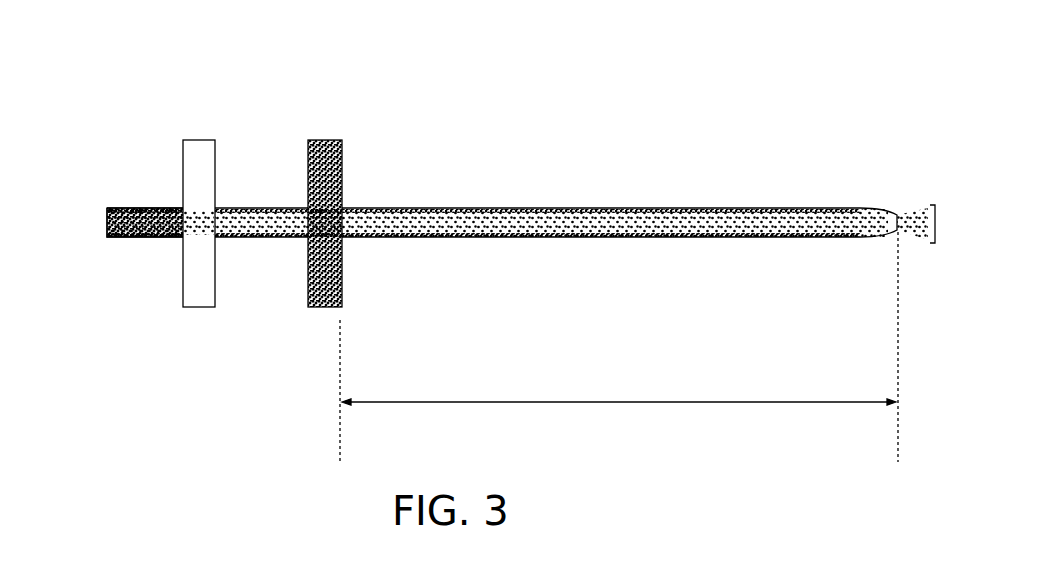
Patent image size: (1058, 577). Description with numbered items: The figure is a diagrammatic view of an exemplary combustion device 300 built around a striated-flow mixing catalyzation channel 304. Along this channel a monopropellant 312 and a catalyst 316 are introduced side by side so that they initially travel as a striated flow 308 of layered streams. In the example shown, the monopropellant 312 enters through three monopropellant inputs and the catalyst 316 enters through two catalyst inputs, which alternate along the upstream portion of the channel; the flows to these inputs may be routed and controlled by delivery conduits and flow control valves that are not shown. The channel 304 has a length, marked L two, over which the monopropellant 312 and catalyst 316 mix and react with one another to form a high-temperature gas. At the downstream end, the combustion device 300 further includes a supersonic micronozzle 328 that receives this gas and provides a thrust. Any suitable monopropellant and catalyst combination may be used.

The combustion device 300 is at (816, 66).
The striated-flow mixing catalyzation channel 304 is at (524, 203).
The striated flow 308 is at (425, 226).
The monopropellant 312 is at (113, 210).
The catalyst 316 is at (190, 152).
The supersonic micronozzle 328 is at (902, 204).